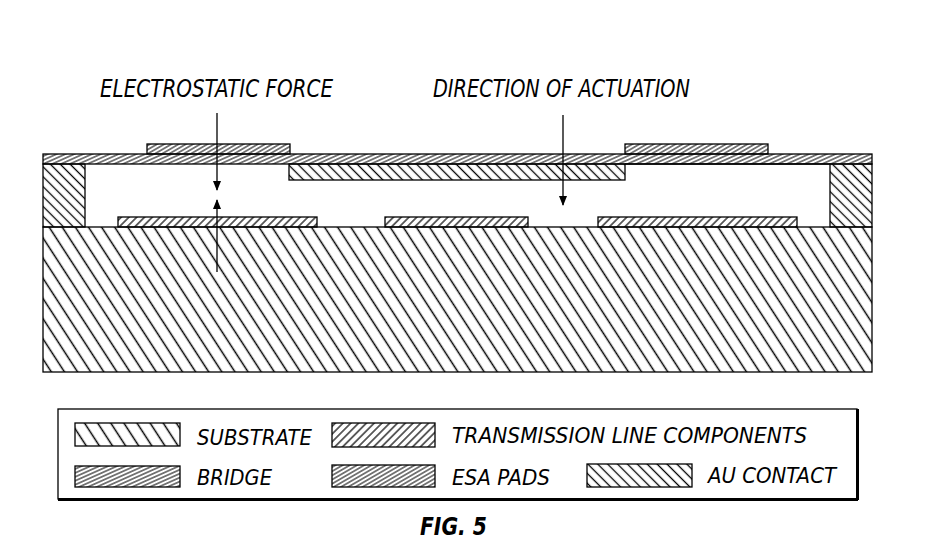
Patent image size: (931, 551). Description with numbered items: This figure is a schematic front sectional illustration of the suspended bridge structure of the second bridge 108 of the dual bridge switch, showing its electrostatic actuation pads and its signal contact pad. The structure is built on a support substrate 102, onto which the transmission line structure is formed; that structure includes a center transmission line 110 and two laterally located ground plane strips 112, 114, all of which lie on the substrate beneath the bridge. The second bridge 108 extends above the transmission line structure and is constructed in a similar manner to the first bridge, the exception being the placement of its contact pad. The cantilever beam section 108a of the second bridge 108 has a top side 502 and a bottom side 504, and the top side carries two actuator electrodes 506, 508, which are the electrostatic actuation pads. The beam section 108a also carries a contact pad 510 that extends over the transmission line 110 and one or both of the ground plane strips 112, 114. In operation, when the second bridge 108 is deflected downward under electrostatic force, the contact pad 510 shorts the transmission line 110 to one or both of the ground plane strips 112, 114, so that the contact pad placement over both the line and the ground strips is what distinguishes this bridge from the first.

The second bridge 108 is at (122, 50).
The cantilever beam section 108a is at (875, 155).
The support substrate 102 is at (135, 352).
The center transmission line 110 is at (462, 218).
The ground plane strip 112 is at (157, 218).
The ground plane strip 114 is at (652, 218).
The top side 502 is at (358, 155).
The bottom side 504 is at (762, 166).
The actuator electrode 506 is at (170, 146).
The actuator electrode 508 is at (697, 145).
The contact pad 510 is at (380, 181).